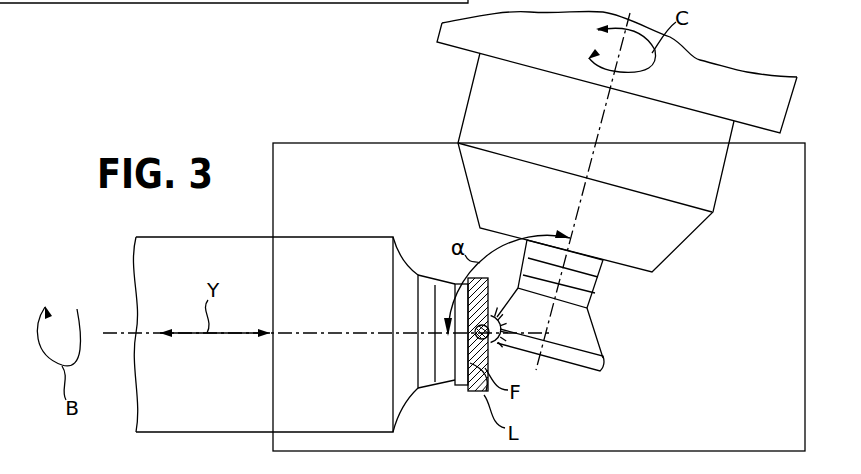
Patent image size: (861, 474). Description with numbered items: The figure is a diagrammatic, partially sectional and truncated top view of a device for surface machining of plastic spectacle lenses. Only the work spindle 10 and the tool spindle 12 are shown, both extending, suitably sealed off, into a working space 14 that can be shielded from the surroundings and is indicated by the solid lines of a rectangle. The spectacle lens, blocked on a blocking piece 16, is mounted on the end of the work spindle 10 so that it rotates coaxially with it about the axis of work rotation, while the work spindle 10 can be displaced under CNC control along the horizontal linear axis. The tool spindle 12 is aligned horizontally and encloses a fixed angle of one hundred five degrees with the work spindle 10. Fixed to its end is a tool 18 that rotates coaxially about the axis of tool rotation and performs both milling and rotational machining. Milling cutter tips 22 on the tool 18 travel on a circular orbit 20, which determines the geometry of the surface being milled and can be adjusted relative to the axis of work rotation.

The work spindle 10 is at (306, 265).
The tool spindle 12 is at (710, 172).
The working space 14 is at (347, 143).
The blocking piece 16 is at (463, 375).
The tool 18 is at (605, 340).
The circular orbit 20 is at (605, 370).
The milling cutter tips 22 is at (487, 340).